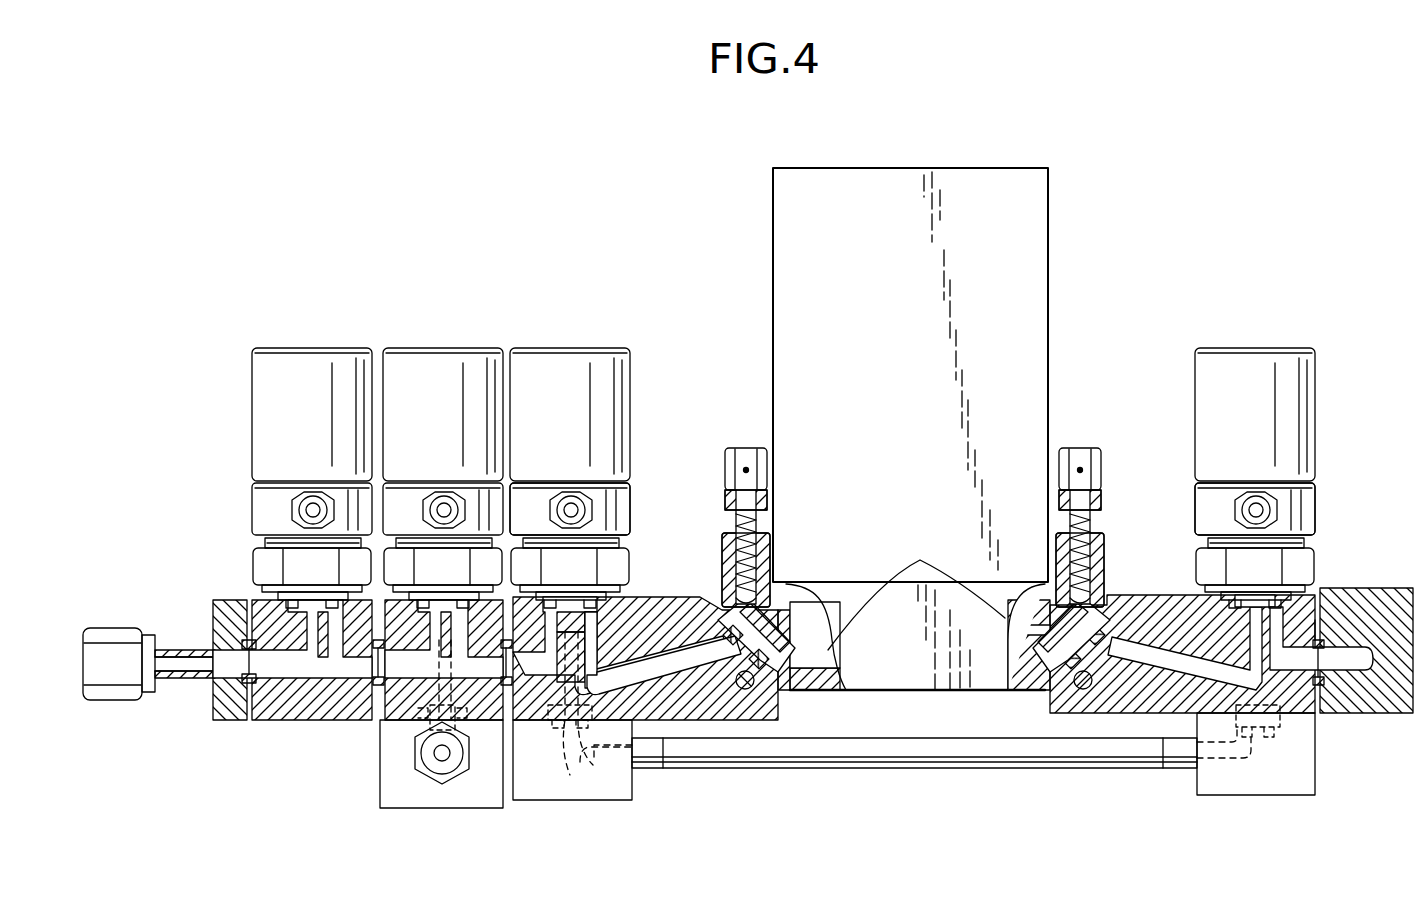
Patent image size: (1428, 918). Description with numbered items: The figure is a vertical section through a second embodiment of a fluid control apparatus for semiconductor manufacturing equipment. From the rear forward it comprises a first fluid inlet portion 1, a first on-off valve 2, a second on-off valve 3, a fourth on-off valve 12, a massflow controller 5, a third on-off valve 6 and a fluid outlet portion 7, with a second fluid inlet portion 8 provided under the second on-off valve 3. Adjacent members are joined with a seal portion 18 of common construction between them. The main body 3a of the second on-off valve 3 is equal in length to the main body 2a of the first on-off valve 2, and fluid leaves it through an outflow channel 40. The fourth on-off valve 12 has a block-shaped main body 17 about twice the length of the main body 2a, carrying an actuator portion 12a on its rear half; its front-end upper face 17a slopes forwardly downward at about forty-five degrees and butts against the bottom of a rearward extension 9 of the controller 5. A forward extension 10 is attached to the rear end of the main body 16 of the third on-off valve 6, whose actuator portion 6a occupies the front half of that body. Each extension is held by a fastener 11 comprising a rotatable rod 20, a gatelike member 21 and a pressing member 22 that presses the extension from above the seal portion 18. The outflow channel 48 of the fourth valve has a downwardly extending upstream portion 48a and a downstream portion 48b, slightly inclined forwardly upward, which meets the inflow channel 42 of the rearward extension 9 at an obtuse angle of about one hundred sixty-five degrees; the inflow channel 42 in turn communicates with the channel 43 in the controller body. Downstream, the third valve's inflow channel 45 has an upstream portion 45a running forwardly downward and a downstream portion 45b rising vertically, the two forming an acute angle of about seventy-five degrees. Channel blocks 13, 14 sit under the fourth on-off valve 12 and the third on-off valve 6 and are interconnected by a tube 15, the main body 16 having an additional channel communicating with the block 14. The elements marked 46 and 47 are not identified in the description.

The first fluid inlet portion 1 is at (185, 680).
The first on-off valve 2 is at (321, 348).
The main body of first on-off valve 2a is at (306, 708).
The second on-off valve 3 is at (470, 348).
The main body of second on-off valve 3a is at (404, 705).
The massflow controller 5 is at (976, 177).
The third on-off valve 6 is at (1271, 348).
The actuator portion of third on-off valve 6a is at (1310, 516).
The fluid outlet portion 7 is at (1395, 698).
The second fluid inlet portion 8 is at (418, 805).
The rearward extension 9 is at (802, 685).
The forward extension 10 is at (1030, 690).
The fastener 11 is at (746, 445).
The fourth on-off valve 12 is at (590, 348).
The actuator portion of fourth on-off valve 12a is at (622, 510).
The channel block 13 is at (611, 792).
The channel block 14 is at (1266, 790).
The tube 15 is at (932, 772).
The main body of third on-off valve 16 is at (1142, 692).
The main body of fourth on-off valve 17 is at (683, 605).
The front-end upper face 17a is at (775, 675).
The seal portion 18 is at (740, 650).
The rotatable rod 20 is at (750, 685).
The gatelike member 21 is at (770, 495).
The pressing member 22 is at (770, 548).
The outflow channel 40 is at (488, 665).
The inflow channel 42 is at (770, 627).
The channel 43 is at (916, 581).
The inflow channel 45 is at (1186, 672).
The upstream portion 45a is at (1110, 707).
The downstream portion 45b is at (1265, 690).
The port 46 is at (537, 727).
The passage 47 is at (562, 738).
The outflow channel 48 is at (690, 684).
The upstream portion 48a is at (645, 655).
The downstream portion 48b is at (650, 695).